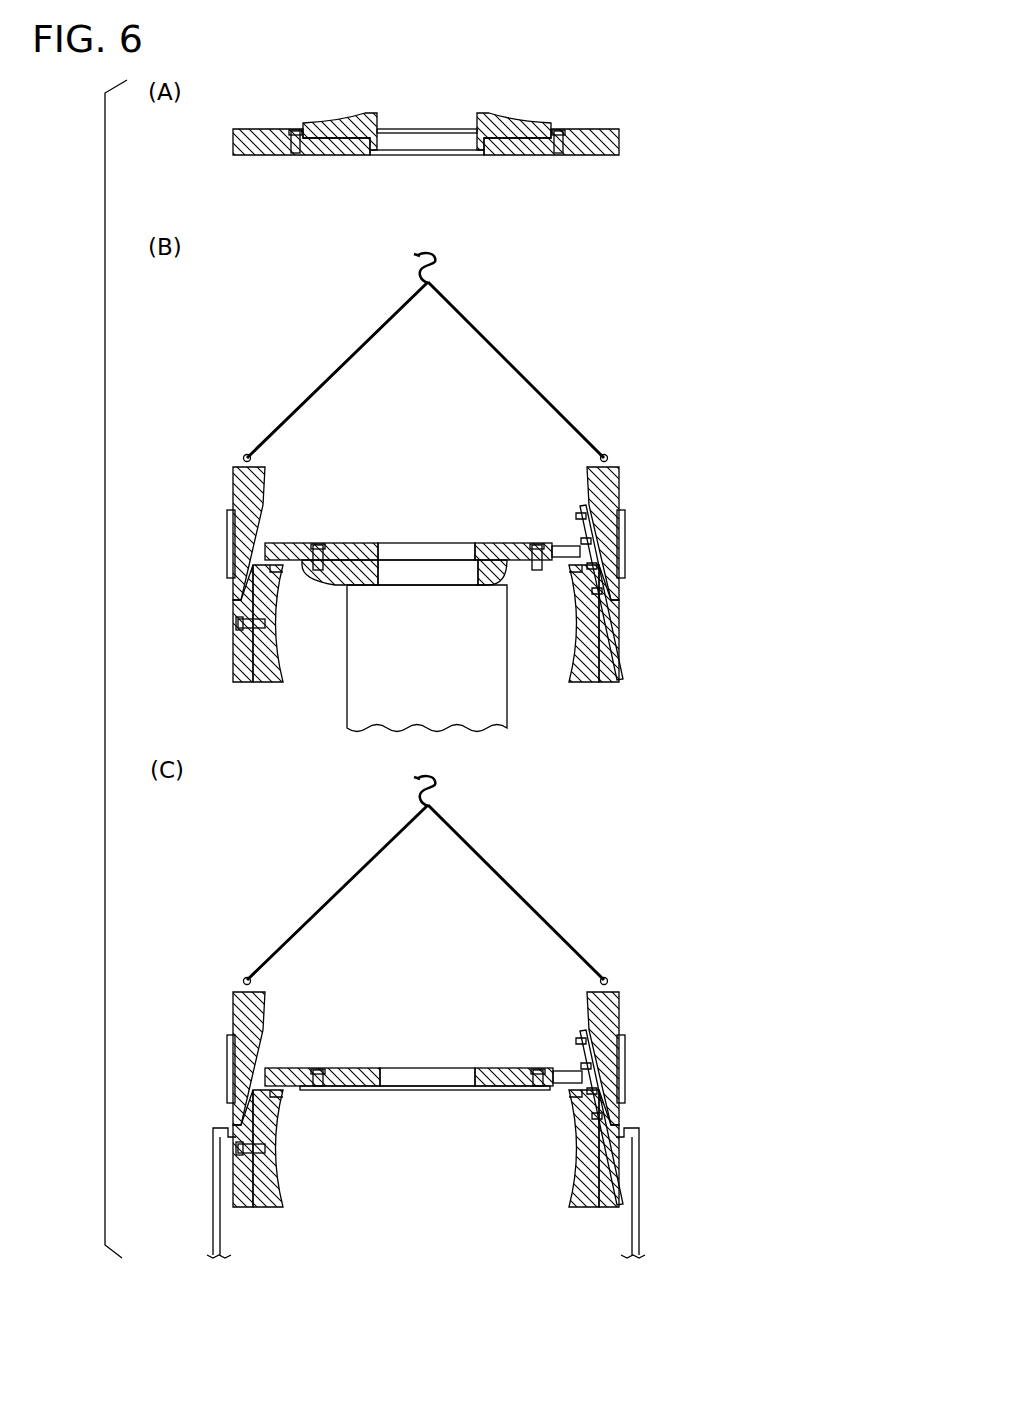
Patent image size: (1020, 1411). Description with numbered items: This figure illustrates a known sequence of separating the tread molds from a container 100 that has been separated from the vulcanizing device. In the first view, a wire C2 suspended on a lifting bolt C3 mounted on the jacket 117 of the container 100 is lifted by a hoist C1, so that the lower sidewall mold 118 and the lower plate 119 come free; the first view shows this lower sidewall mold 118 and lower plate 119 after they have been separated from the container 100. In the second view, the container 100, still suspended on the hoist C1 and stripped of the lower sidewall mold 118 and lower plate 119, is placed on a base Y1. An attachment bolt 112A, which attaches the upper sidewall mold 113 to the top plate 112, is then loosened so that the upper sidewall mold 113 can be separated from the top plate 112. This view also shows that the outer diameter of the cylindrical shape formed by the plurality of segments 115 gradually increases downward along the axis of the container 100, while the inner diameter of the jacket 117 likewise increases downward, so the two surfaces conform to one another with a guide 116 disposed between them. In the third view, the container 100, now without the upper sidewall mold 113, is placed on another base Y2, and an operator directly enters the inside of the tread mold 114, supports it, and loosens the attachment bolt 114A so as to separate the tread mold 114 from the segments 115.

The container 100 is at (660, 308).
The top plate 112 is at (516, 541).
The attachment bolt 112A is at (320, 541).
The upper sidewall mold 113 is at (508, 570).
The tread mold 114 is at (268, 644).
The attachment bolt 114A is at (238, 623).
The segments 115 is at (236, 672).
The guide 116 is at (624, 667).
The jacket 117 is at (615, 500).
The lower sidewall mold 118 is at (340, 127).
The lower plate 119 is at (333, 155).
The hoist C1 is at (445, 268).
The wire C2 is at (520, 362).
The lifting bolt C3 is at (610, 456).
The base Y1 is at (508, 697).
The base Y2 is at (218, 1202).